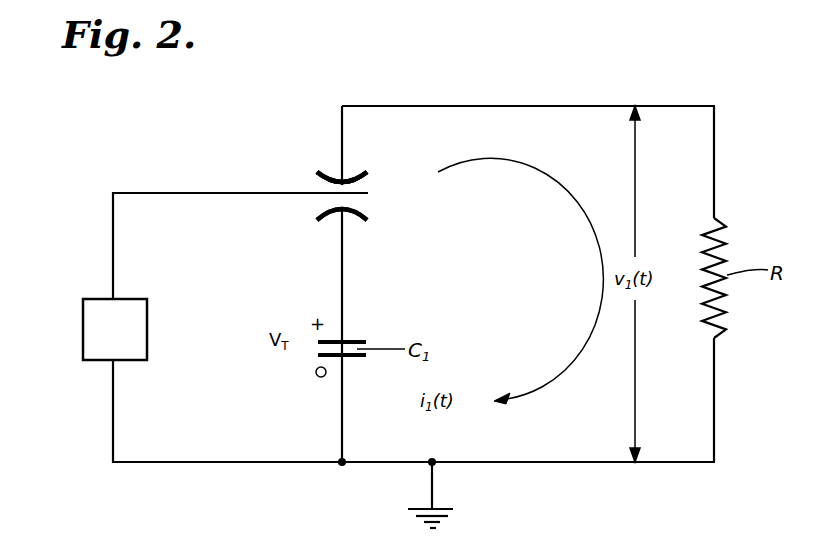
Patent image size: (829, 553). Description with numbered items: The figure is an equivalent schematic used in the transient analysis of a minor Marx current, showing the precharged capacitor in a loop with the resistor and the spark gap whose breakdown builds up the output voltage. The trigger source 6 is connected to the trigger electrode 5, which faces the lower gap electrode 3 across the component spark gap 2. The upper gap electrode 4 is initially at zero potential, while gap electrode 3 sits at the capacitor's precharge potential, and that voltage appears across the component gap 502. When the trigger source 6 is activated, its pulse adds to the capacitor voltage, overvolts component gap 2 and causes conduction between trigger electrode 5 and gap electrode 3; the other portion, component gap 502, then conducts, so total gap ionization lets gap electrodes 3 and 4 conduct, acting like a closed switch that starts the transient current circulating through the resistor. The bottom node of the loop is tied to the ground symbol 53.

The component spark gap 2 is at (354, 204).
The gap electrode 3 is at (323, 219).
The gap electrode 4 is at (356, 175).
The trigger electrode 5 is at (345, 191).
The component gap 502 is at (347, 191).
The trigger source 6 is at (83, 330).
The ground 53 is at (452, 509).